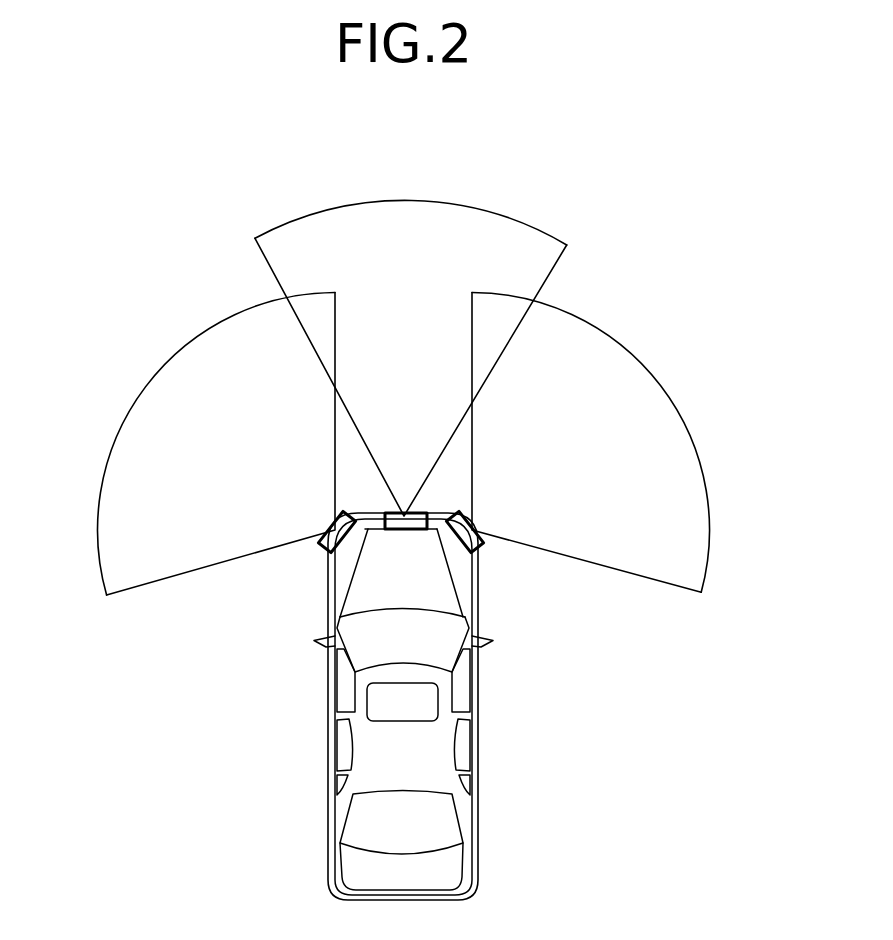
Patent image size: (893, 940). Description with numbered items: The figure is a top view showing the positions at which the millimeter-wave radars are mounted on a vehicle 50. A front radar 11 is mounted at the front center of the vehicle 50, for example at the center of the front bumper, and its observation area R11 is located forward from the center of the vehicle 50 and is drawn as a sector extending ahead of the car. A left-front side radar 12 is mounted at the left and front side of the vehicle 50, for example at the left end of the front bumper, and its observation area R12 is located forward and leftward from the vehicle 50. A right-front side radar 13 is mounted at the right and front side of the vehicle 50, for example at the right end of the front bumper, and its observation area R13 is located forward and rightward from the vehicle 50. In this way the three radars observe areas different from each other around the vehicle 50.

The observation area of the front radar R11 is at (413, 201).
The observation area of the left-front side radar R12 is at (172, 358).
The observation area of the right-front side radar R13 is at (653, 368).
The front radar 11 is at (405, 513).
The left-front side radar 12 is at (331, 515).
The right-front side radar 13 is at (474, 513).
The vehicle 50 is at (478, 883).